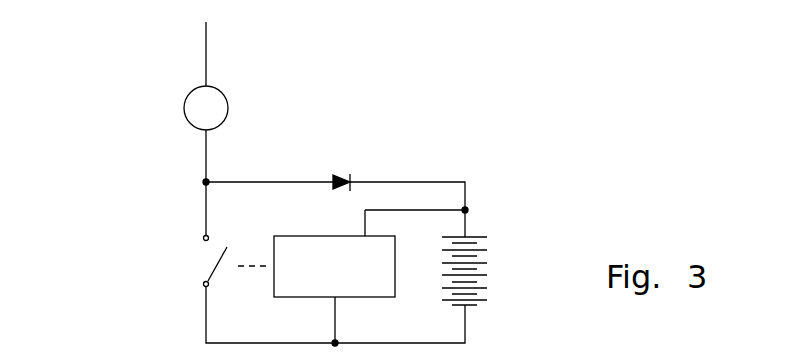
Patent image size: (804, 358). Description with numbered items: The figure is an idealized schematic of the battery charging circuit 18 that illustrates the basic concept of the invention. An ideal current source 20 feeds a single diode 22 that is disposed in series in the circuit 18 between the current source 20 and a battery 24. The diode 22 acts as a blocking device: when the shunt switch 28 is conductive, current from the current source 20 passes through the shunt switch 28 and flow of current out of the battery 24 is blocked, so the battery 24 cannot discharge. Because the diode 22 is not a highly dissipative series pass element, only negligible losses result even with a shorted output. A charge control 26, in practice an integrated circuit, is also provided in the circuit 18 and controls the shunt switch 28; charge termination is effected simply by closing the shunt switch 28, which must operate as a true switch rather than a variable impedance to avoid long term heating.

The circuit 18 is at (452, 118).
The ideal current source 20 is at (184, 108).
The diode 22 is at (358, 160).
The battery 24 is at (490, 225).
The charge control 26 is at (375, 298).
The shunt switch 28 is at (237, 220).